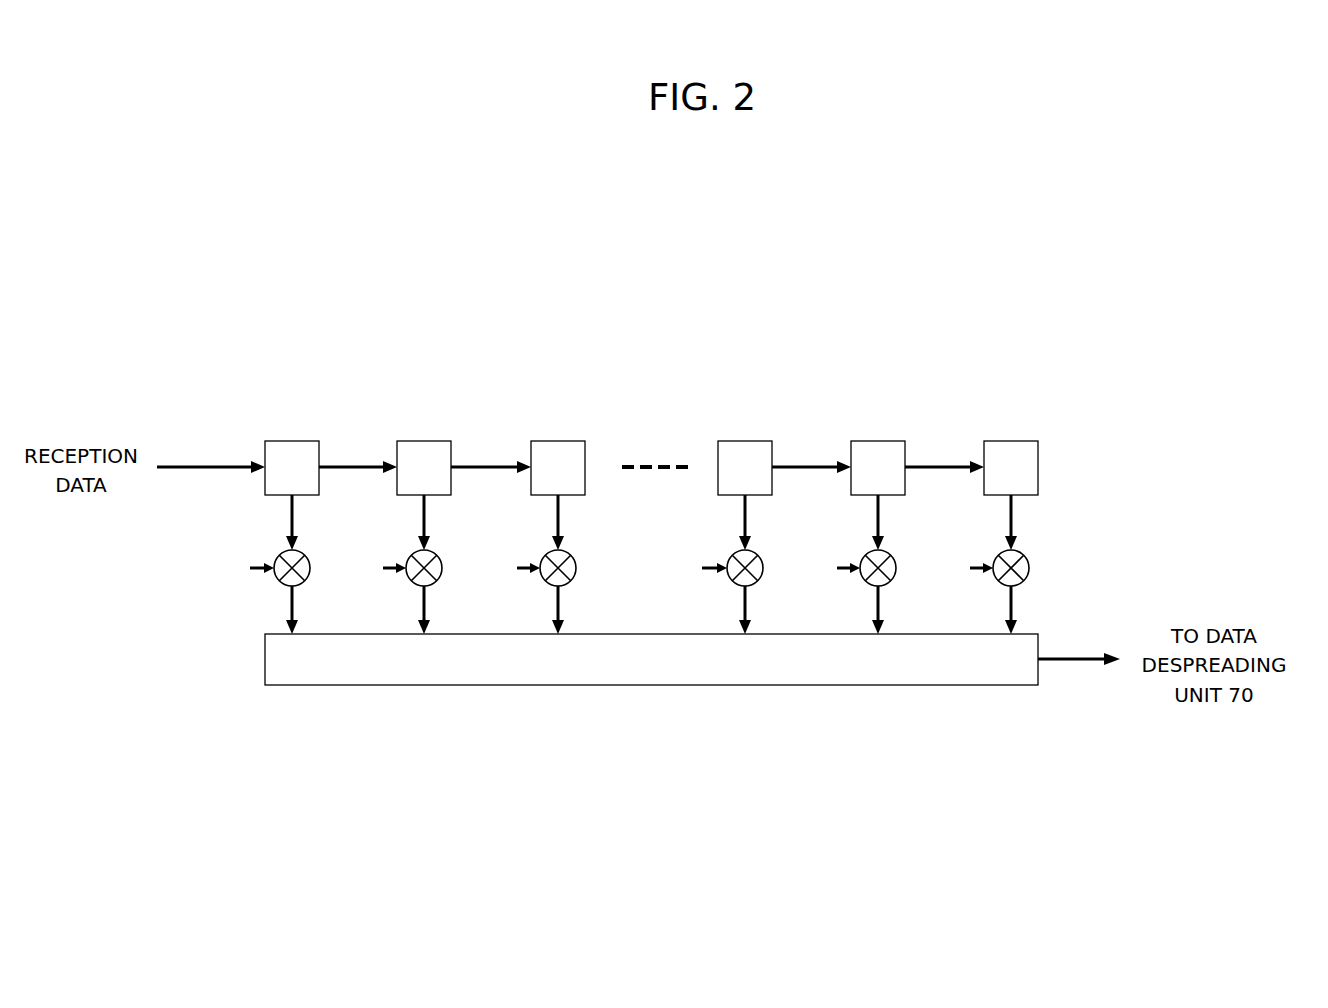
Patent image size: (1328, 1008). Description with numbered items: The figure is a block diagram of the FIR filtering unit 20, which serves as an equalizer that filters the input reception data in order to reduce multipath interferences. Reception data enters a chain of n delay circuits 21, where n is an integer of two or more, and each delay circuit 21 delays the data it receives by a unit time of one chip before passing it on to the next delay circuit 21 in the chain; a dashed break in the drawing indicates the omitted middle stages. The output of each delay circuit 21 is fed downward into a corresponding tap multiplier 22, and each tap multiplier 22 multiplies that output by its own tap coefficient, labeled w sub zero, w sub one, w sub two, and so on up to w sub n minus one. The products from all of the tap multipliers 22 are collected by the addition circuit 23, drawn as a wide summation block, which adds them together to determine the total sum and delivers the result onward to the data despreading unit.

The FIR filtering unit 20 is at (742, 318).
The delay circuit 21 is at (292, 441).
The tap multiplier 22 is at (304, 551).
The addition circuit 23 is at (650, 685).